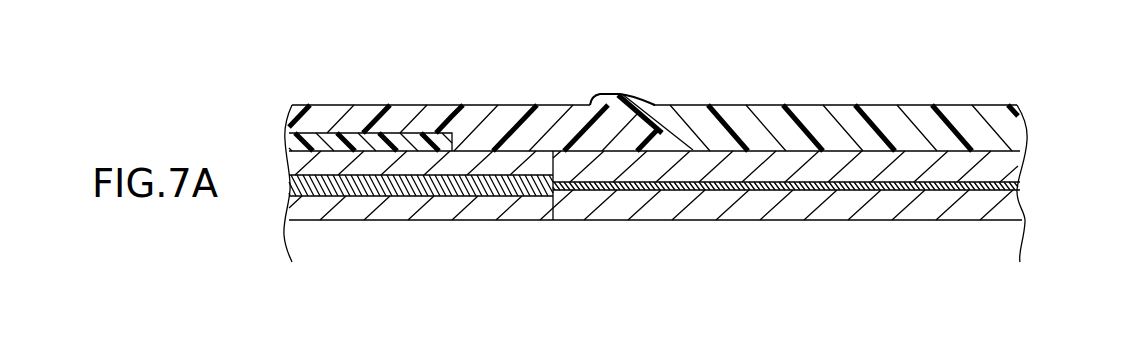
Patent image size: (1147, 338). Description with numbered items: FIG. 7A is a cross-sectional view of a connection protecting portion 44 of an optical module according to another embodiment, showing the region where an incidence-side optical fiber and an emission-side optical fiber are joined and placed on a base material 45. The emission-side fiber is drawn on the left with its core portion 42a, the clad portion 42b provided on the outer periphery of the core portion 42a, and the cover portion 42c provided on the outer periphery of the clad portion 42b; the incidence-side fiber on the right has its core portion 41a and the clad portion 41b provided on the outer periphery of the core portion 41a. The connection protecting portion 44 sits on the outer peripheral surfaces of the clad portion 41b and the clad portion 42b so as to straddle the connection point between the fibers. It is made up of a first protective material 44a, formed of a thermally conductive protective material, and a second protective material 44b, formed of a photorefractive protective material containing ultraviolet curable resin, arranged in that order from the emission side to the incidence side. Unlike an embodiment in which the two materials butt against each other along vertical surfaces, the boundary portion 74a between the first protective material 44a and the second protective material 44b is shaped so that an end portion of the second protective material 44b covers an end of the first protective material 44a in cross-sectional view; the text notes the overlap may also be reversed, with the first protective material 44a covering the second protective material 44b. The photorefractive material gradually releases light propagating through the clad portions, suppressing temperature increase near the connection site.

The core portion 41a is at (972, 182).
The clad portion 41b is at (913, 165).
The core portion 42a is at (442, 170).
The clad portion 42b is at (405, 165).
The cover portion 42c is at (352, 128).
The connection protecting portion 44 is at (637, 85).
The first protective material 44a is at (508, 105).
The second protective material 44b is at (817, 127).
The boundary portion 74a is at (593, 93).
The base material 45 is at (993, 243).